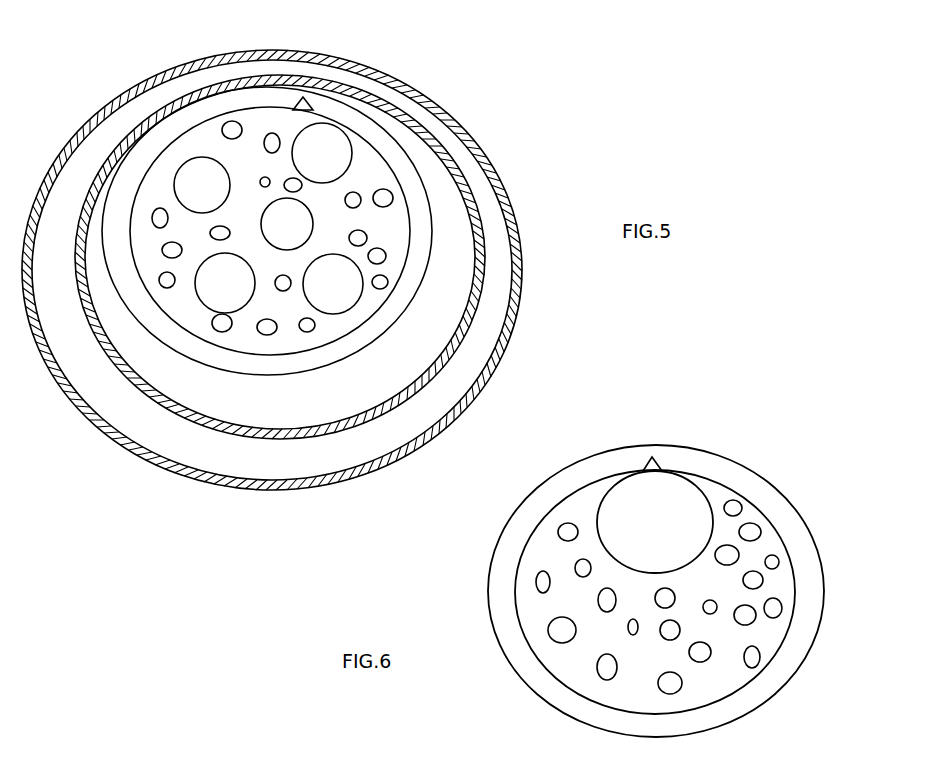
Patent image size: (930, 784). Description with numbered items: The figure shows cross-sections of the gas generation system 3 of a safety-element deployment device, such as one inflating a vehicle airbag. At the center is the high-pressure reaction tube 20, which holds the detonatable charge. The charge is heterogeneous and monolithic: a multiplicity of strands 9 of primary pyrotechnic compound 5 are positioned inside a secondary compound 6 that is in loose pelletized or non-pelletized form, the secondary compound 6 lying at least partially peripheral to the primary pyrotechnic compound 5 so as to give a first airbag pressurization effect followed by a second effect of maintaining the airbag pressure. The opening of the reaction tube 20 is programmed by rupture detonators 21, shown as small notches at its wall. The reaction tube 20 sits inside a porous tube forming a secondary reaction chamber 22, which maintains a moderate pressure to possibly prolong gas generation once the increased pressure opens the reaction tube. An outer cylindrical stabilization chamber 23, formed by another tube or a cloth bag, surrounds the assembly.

In FIG. 5, the gas generation system 3 is at (95, 95).
In FIG. 6, the gas generation system 3 is at (478, 568).
In FIG. 5, the primary pyrotechnic compound 5 is at (338, 147).
In FIG. 6, the primary pyrotechnic compound 5 is at (630, 507).
In FIG. 5, the secondary compound 6 is at (355, 197).
In FIG. 6, the secondary compound 6 is at (773, 562).
In FIG. 5, the strand 9 is at (287, 228).
In FIG. 5, the high-pressure reaction tube 20 is at (413, 193).
In FIG. 6, the high-pressure reaction tube 20 is at (743, 487).
In FIG. 5, the rupture detonators 21 is at (316, 94).
In FIG. 6, the rupture detonators 21 is at (662, 463).
In FIG. 5, the secondary reaction chamber 22 is at (480, 218).
In FIG. 5, the cylindrical stabilization chamber 23 is at (492, 298).